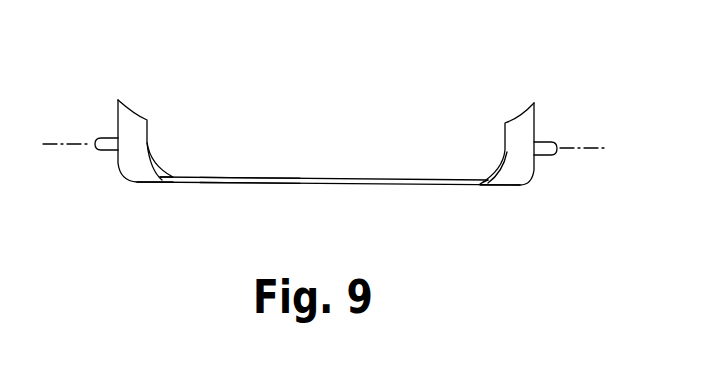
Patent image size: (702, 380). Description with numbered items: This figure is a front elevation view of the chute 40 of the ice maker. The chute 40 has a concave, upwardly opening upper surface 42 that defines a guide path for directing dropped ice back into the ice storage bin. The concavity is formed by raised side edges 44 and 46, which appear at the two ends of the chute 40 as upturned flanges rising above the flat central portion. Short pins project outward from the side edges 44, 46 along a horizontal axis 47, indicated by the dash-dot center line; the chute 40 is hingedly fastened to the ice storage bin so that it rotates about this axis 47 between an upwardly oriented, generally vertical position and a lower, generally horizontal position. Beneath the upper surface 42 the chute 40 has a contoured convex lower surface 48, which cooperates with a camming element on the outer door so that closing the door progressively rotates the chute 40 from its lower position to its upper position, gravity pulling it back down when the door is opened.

The chute 40 is at (377, 184).
The upper surface 42 is at (257, 177).
The raised side edge 44 is at (127, 130).
The raised side edge 46 is at (527, 138).
The horizontal axis 47 is at (83, 140).
The lower surface 48 is at (263, 184).